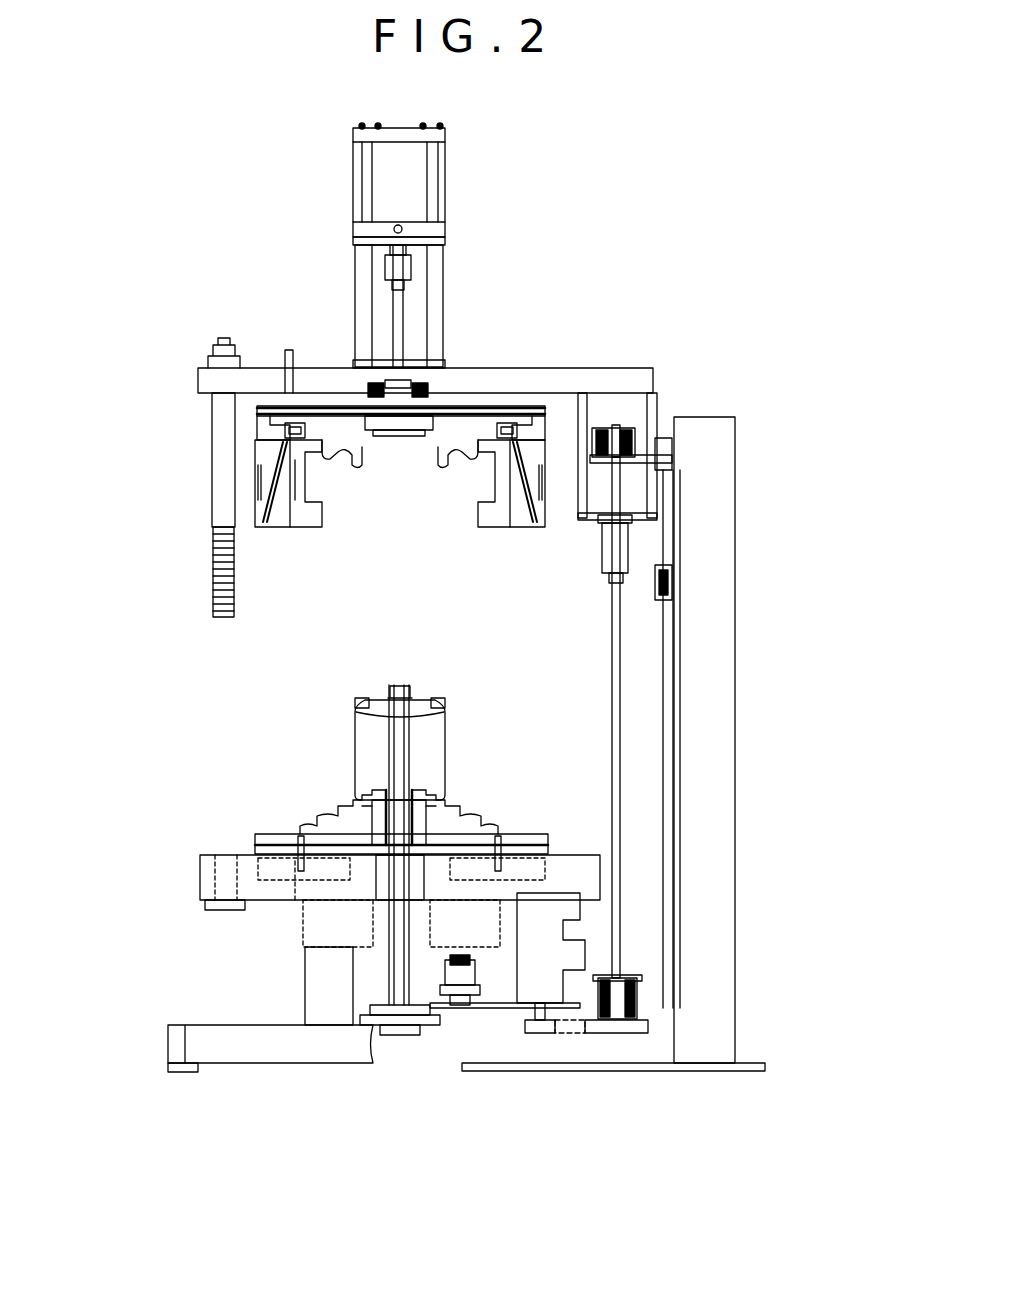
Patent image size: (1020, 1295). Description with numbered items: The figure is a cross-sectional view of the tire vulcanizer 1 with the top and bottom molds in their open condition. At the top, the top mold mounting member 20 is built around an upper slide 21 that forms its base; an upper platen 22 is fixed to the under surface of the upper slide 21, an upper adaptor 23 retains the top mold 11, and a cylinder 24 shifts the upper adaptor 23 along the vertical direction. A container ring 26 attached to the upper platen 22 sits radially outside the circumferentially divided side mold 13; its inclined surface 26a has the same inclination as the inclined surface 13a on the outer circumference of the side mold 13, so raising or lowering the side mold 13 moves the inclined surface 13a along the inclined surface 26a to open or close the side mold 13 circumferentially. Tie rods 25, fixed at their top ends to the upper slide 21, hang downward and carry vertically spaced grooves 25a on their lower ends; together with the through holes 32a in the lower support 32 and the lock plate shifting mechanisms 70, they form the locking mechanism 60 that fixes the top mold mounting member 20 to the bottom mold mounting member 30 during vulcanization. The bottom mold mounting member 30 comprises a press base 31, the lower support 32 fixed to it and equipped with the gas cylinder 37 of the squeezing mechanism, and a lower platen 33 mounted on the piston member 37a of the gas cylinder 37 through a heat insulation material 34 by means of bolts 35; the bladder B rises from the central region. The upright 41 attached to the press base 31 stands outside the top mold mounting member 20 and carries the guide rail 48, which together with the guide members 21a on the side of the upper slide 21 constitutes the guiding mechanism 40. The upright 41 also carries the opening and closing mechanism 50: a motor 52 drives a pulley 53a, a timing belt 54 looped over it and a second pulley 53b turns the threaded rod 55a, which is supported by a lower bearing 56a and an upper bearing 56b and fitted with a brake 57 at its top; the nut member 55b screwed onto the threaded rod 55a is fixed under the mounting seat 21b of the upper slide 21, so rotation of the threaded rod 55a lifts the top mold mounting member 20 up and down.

The tire vulcanizer 1 is at (232, 210).
The top mold mounting member 20 is at (247, 320).
The upper slide 21 is at (545, 368).
The guide members 21a is at (665, 455).
The mounting seat 21b is at (665, 462).
The upper platen 22 is at (345, 395).
The upper adaptor 23 is at (455, 395).
The cylinder 24 is at (353, 160).
The tie rods 25 is at (223, 527).
The grooves 25a is at (237, 605).
The container ring 26 is at (258, 458).
The inclined surface 26a is at (262, 500).
The top mold 11 is at (342, 455).
The side mold 13 is at (296, 485).
The inclined surface 13a is at (272, 505).
The bottom mold mounting member 30 is at (305, 1090).
The press base 31 is at (232, 1050).
The lower support 32 is at (270, 900).
The through holes 32a is at (228, 880).
The lower platen 33 is at (285, 842).
The heat insulation material 34 is at (520, 852).
The bolts 35 is at (490, 850).
The gas cylinder 37 is at (268, 845).
The piston member 37a is at (292, 900).
The guiding mechanism 40 is at (815, 587).
The upright 41 is at (714, 362).
The guide rail 48 is at (672, 655).
The opening and closing mechanism 50 is at (600, 1035).
The motor 52 is at (540, 965).
The pulley 53a is at (535, 1035).
The pulley 53b is at (618, 1035).
The timing belt 54 is at (575, 1030).
The threaded rod 55a is at (620, 815).
The nut member 55b is at (620, 545).
The lower bearing 56a is at (640, 1000).
The upper bearing 56b is at (600, 505).
The brake 57 is at (626, 430).
The locking mechanism 60 is at (90, 655).
The lock plate shifting mechanisms 70 is at (198, 905).
The bladder B is at (448, 735).